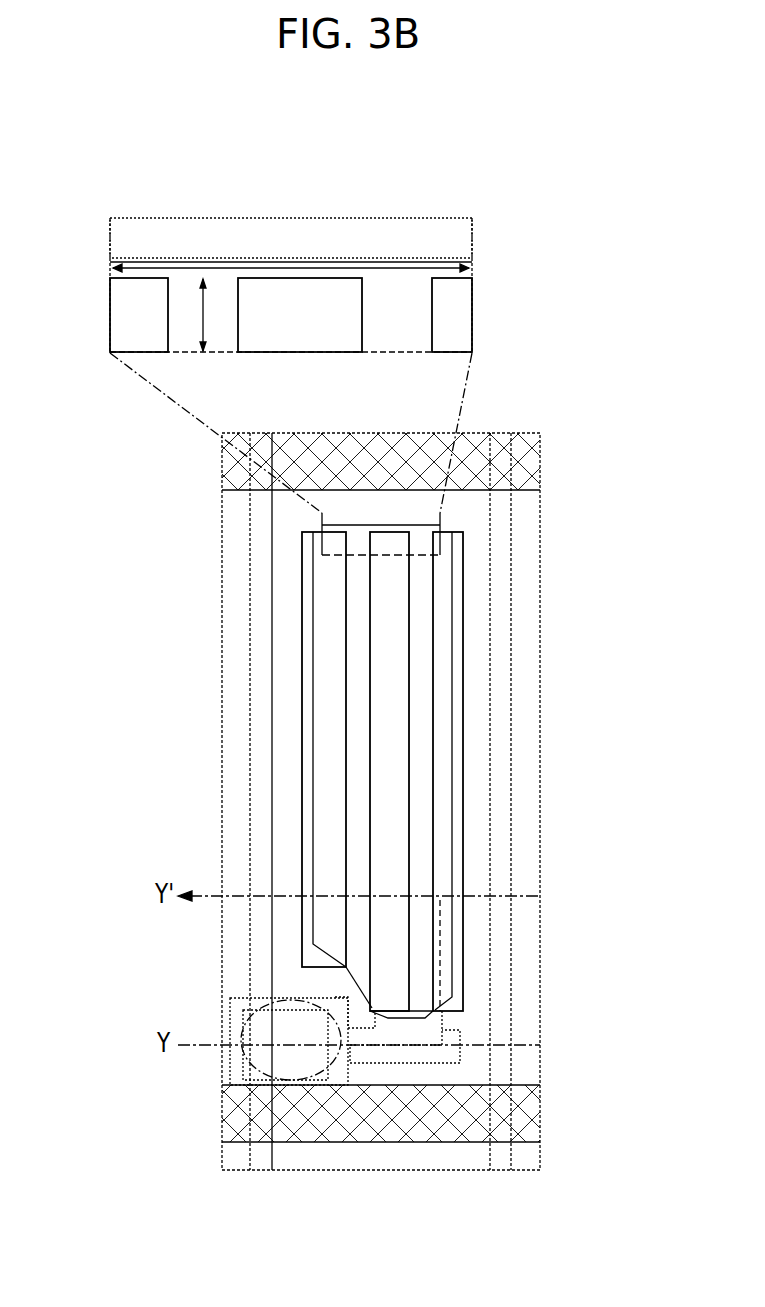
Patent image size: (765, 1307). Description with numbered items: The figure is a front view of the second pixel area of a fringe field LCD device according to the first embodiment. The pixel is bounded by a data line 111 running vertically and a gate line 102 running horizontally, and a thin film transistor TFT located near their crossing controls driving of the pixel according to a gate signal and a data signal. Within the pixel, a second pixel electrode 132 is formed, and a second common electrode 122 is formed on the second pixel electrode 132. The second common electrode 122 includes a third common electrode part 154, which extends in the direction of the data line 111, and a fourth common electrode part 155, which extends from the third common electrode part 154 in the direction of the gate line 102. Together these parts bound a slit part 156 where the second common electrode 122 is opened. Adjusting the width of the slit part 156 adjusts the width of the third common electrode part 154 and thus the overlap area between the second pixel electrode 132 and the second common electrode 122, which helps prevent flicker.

The fourth common electrode part 155 is at (336, 267).
The third common electrode part 154 is at (190, 308).
The slit part 156 is at (297, 318).
The second pixel electrode 132 is at (330, 639).
The second common electrode 122 is at (358, 710).
The data line 111 is at (262, 797).
The gate line 102 is at (237, 1112).
The thin film transistor TFT is at (297, 1087).